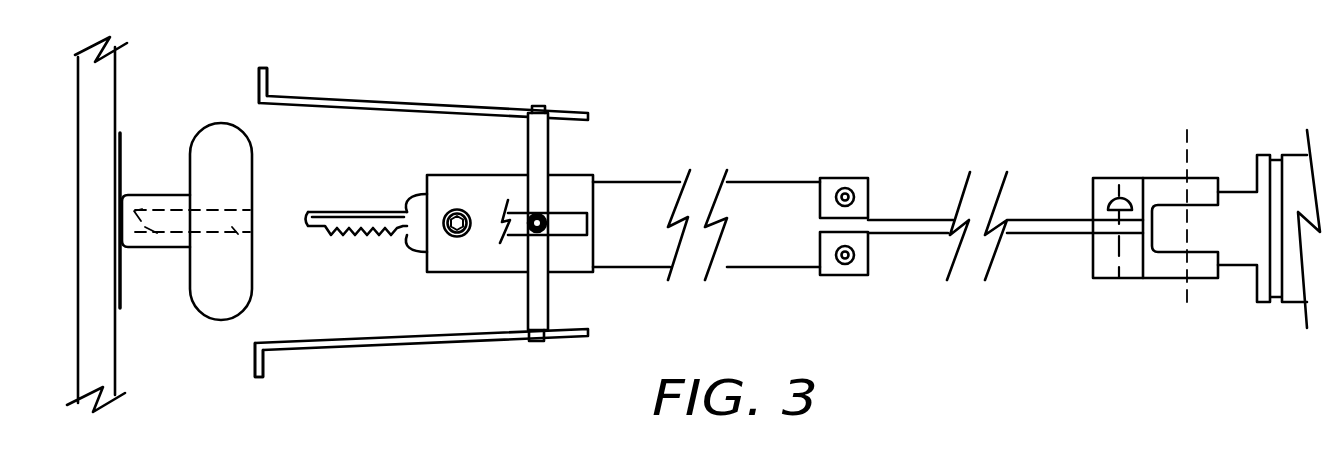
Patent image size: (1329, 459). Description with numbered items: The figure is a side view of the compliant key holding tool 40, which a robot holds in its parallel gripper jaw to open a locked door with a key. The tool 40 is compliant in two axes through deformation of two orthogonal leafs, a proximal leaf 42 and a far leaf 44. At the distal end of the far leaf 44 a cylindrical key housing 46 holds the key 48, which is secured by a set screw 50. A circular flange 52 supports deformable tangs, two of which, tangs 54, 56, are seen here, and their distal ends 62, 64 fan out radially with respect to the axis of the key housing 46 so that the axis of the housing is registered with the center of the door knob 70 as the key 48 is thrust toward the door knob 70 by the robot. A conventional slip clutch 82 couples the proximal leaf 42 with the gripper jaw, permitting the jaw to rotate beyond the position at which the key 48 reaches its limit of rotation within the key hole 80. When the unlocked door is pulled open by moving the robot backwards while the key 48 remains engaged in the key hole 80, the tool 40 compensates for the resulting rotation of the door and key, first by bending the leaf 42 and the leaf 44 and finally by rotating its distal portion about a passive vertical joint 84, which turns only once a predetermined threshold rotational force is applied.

The compliant key holding tool 40 is at (587, 191).
The proximal leaf 42 is at (902, 224).
The far leaf 44 is at (782, 200).
The cylindrical key housing 46 is at (477, 174).
The key 48 is at (353, 211).
The set screw 50 is at (454, 238).
The circular flange 52 is at (543, 155).
The deformable tang 54 is at (374, 101).
The deformable tang 56 is at (366, 345).
The distal end of tang 62 is at (258, 70).
The distal end of tang 64 is at (255, 365).
The door knob 70 is at (143, 197).
The key hole 80 is at (238, 237).
The slip clutch 82 is at (1105, 279).
The passive vertical joint 84 is at (1205, 220).